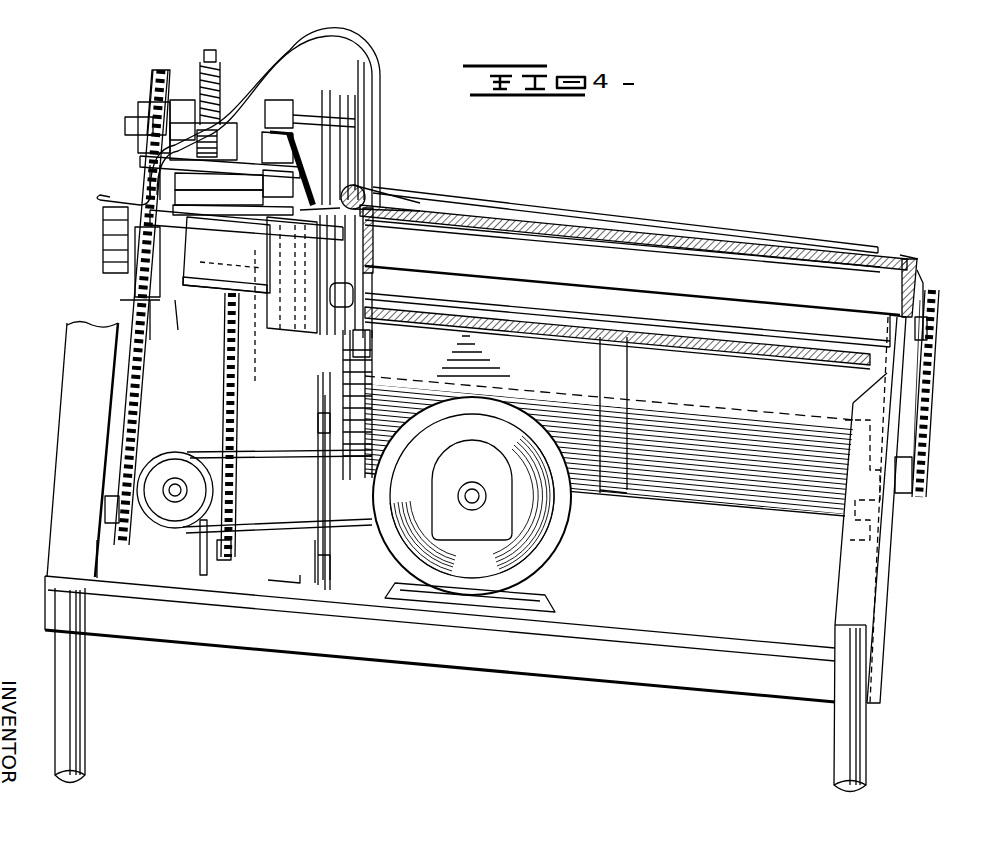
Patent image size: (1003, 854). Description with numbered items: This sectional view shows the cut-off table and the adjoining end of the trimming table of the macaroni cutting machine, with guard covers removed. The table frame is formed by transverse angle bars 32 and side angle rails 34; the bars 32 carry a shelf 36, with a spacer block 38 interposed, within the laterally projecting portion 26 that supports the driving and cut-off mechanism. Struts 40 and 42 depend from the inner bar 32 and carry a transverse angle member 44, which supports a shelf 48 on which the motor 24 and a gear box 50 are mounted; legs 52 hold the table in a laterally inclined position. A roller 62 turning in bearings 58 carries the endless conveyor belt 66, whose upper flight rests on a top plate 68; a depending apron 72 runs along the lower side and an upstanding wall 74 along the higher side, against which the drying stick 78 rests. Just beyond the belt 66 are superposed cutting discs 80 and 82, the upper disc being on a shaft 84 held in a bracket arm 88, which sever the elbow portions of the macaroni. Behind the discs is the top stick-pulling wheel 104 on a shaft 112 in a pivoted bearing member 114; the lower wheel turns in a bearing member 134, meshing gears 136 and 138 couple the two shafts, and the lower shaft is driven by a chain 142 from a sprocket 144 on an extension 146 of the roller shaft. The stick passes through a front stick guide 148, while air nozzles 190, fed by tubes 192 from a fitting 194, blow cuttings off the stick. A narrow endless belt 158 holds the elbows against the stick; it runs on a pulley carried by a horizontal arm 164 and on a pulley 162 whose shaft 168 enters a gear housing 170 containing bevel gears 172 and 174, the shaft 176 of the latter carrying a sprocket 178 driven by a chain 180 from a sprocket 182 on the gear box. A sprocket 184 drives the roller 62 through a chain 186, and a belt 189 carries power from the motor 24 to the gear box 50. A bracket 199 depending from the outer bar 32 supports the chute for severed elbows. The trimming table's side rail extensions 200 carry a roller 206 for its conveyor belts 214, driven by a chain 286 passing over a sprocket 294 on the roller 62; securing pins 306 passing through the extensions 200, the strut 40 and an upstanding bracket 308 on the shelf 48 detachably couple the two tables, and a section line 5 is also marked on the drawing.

The section line 5- 5 is at (602, 207).
The motor 24 is at (568, 534).
The laterally projecting portion 26 is at (103, 124).
The transverse angle bars 32 is at (184, 230).
The side angle rails 34 is at (376, 246).
The shelf 36 is at (150, 181).
The spacer block 38 is at (97, 197).
The frame supporting strut 40 is at (890, 606).
The frame supporting strut 42 is at (60, 430).
The transverse angle member 44 is at (503, 678).
The shelf 48 is at (312, 605).
The gear box 50 is at (209, 574).
The supporting legs 52 is at (86, 688).
The bearings 58 is at (934, 356).
The roller 62 is at (791, 350).
The endless conveyor belt 66 is at (784, 262).
The top plate 68 is at (719, 256).
The protective depending apron 72 is at (917, 273).
The upstanding wall 74 is at (298, 152).
The drying stick 78 is at (366, 191).
The cutting disc 80 is at (357, 66).
The cutting disc 82 is at (337, 345).
The shaft 84 is at (293, 96).
The bracket arm 88 is at (185, 163).
The top wheel 104 is at (383, 119).
The shaft 112 is at (326, 120).
The bearing member 114 is at (222, 106).
The bearing member 134 is at (103, 215).
The gear 136 is at (152, 76).
The gear 138 is at (103, 230).
The chain 142 is at (103, 245).
The sprocket 144 is at (103, 260).
The shaft extension 146 is at (125, 272).
The front stick guide 148 is at (392, 200).
The narrow endless belt 158 is at (234, 183).
The pulley 162 is at (233, 200).
The horizontal arm 164 is at (278, 151).
The shaft 168 is at (296, 340).
The gear housing 170 is at (190, 298).
The bevel gear 172 is at (281, 301).
The second bevel gear 174 is at (225, 277).
The shaft 176 is at (167, 315).
The sprocket 178 is at (147, 323).
The chain 180 is at (140, 370).
The sprocket 182 is at (104, 520).
The sprocket 184 is at (233, 548).
The chain 186 is at (237, 405).
The belt 189 is at (282, 472).
The air nozzles 190 is at (364, 186).
The feed tubes 192 is at (356, 42).
The manifold or fitting 194 is at (140, 161).
The bracket 199 is at (375, 345).
The side rail extensions 200 is at (338, 384).
The roller 206 is at (620, 498).
The belts 214 is at (622, 372).
The endless chain 286 is at (930, 384).
The sprocket 294 is at (940, 300).
The securing pins 306 is at (317, 426).
The upstanding bracket 308 is at (330, 558).